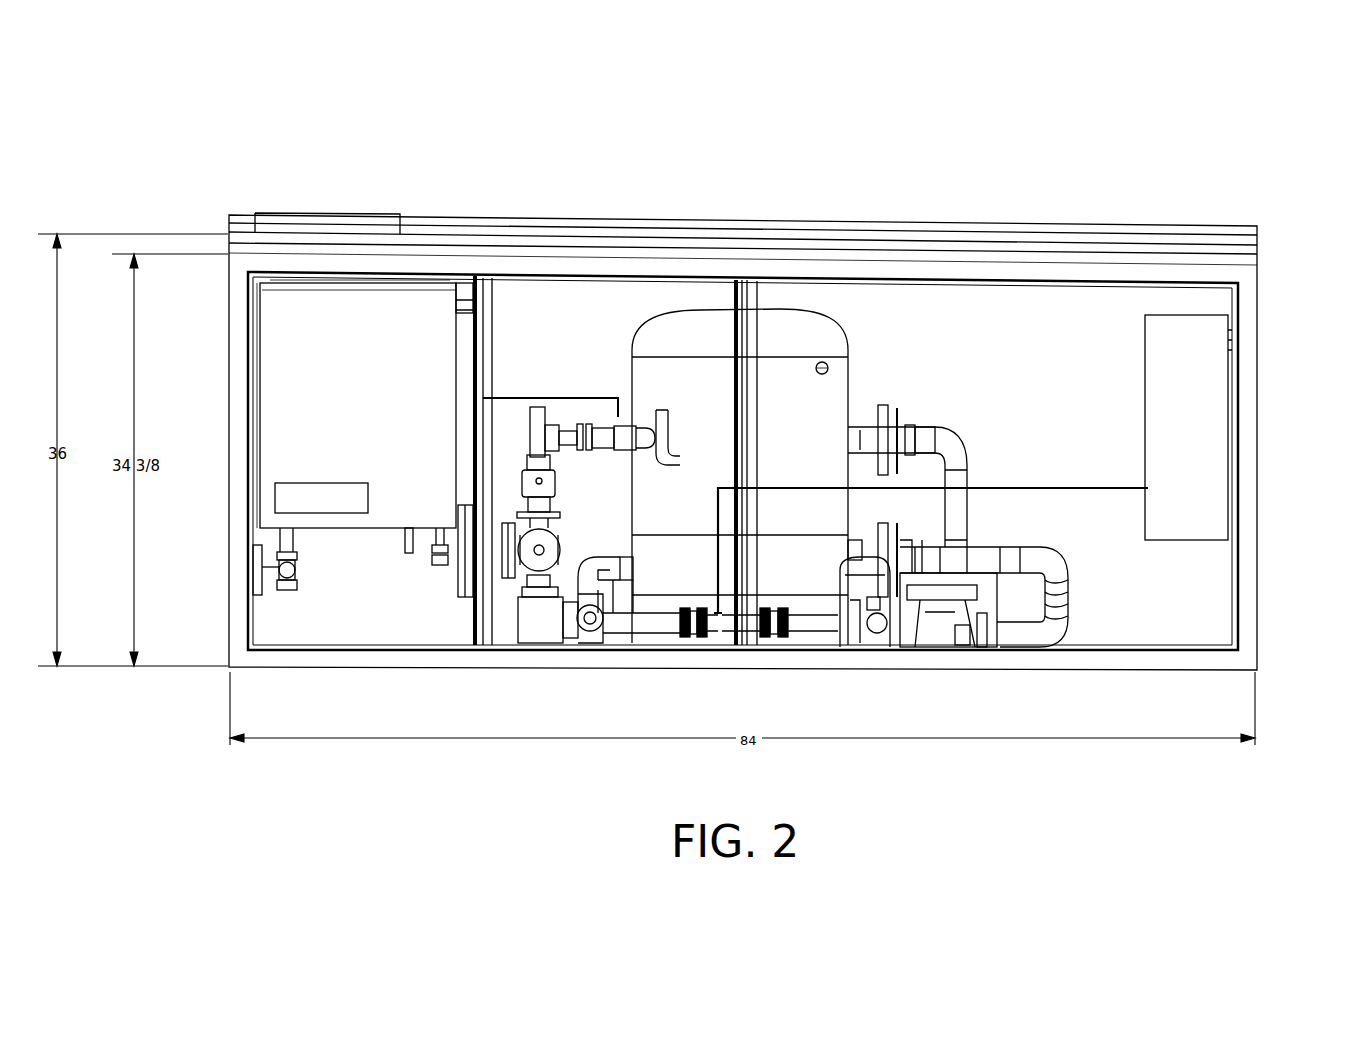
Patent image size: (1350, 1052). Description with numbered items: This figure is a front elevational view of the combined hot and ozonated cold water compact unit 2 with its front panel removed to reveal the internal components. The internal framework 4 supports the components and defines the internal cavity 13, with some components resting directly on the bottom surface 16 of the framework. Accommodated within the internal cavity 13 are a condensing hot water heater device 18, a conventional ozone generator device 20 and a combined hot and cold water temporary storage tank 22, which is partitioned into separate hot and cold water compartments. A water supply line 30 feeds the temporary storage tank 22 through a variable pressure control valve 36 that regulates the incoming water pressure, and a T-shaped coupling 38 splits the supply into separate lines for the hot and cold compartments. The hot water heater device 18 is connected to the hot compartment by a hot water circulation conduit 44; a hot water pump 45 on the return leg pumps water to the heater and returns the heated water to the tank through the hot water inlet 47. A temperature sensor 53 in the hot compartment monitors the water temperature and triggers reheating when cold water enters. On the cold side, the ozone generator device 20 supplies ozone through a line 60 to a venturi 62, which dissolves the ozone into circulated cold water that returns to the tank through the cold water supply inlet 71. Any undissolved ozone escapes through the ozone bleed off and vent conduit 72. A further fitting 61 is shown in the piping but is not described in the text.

The combined hot and ozonated cold water compact unit 2 is at (1265, 233).
The framework 4 is at (753, 313).
The internal cavity 13 is at (601, 310).
The bottom surface 16 is at (660, 668).
The condensing hot water heater device 18 is at (366, 370).
The ozone generator device 20 is at (1208, 445).
The combined hot and cold water temporary storage tank 22 is at (840, 333).
The water supply line 30 is at (1070, 600).
The variable pressure control valve 36 is at (940, 618).
The T-shaped coupling 38 is at (968, 548).
The hot water circulation conduit 44 is at (527, 460).
The hot water pump 45 is at (523, 572).
The hot water inlet 47 is at (645, 427).
The temperature sensor 53 is at (612, 428).
The line 60 is at (1047, 490).
The union 61 is at (733, 627).
The venturi 62 is at (720, 623).
The cold water supply inlet 71 is at (843, 572).
The ozone bleed off and vent conduit 72 is at (672, 436).